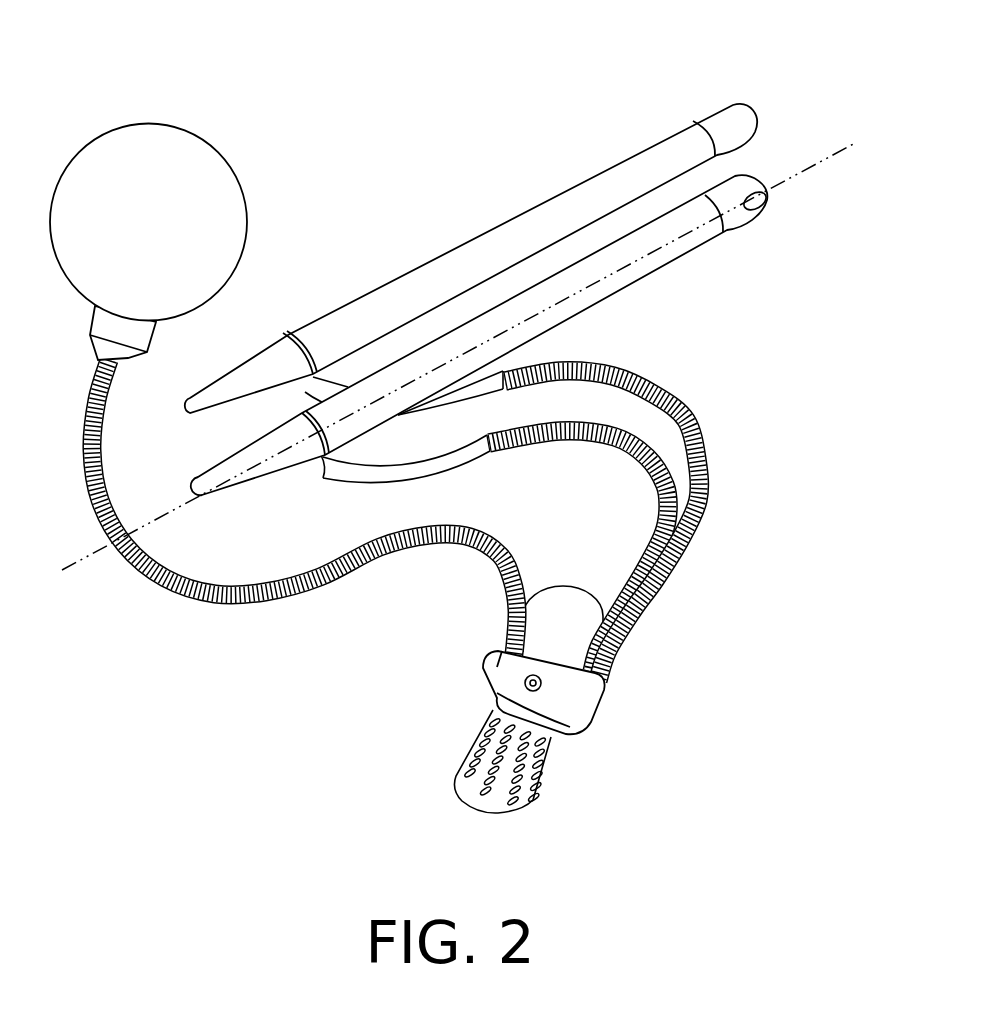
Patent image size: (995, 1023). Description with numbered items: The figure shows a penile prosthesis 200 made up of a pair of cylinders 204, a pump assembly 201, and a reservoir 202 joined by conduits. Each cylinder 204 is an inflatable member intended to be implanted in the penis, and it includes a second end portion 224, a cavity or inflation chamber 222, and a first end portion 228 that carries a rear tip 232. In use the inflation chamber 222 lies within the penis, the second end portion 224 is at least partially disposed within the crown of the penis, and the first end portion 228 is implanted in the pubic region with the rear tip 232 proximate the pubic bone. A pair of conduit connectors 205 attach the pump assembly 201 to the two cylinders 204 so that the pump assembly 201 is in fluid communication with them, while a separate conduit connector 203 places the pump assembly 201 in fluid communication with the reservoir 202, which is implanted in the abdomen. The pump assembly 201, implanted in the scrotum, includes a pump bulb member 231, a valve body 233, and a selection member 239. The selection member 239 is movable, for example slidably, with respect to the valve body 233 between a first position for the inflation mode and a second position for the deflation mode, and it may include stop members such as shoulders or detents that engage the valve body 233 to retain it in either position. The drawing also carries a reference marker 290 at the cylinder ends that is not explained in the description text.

The penile prosthesis 200 is at (387, 98).
The pump assembly 201 is at (589, 682).
The reservoir 202 is at (190, 155).
The conduit connector 203 is at (249, 603).
The cylinder 204 is at (478, 297).
The conduit connector 205 is at (707, 446).
The inflation chamber 222 is at (452, 262).
The second end portion 224 is at (720, 127).
The first end portion 228 is at (266, 368).
The pump bulb member 231 is at (537, 768).
The rear tip 232 is at (186, 412).
The valve body 233 is at (557, 696).
The selection member 239 is at (483, 678).
The marker 290 is at (746, 208).